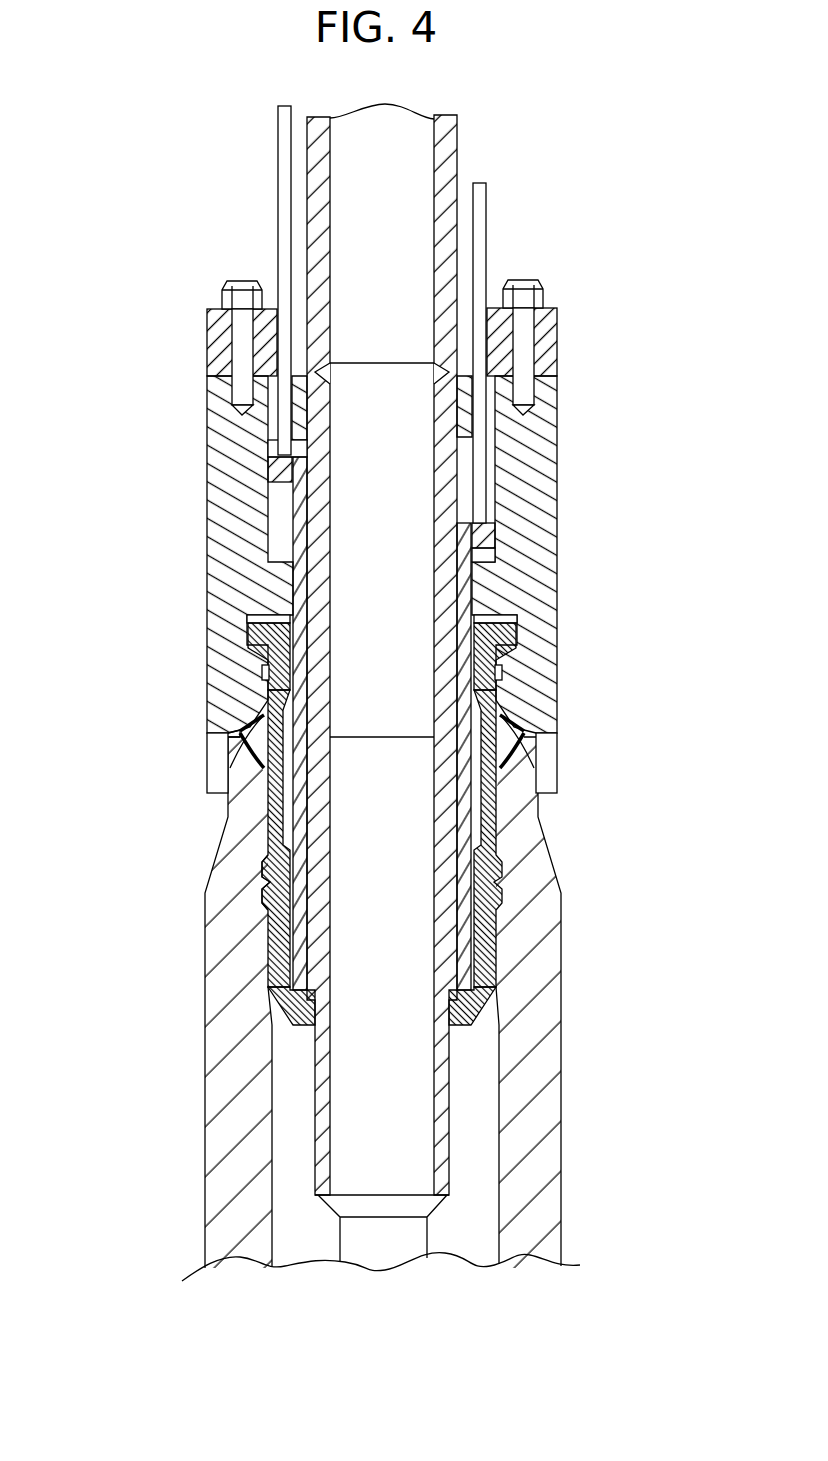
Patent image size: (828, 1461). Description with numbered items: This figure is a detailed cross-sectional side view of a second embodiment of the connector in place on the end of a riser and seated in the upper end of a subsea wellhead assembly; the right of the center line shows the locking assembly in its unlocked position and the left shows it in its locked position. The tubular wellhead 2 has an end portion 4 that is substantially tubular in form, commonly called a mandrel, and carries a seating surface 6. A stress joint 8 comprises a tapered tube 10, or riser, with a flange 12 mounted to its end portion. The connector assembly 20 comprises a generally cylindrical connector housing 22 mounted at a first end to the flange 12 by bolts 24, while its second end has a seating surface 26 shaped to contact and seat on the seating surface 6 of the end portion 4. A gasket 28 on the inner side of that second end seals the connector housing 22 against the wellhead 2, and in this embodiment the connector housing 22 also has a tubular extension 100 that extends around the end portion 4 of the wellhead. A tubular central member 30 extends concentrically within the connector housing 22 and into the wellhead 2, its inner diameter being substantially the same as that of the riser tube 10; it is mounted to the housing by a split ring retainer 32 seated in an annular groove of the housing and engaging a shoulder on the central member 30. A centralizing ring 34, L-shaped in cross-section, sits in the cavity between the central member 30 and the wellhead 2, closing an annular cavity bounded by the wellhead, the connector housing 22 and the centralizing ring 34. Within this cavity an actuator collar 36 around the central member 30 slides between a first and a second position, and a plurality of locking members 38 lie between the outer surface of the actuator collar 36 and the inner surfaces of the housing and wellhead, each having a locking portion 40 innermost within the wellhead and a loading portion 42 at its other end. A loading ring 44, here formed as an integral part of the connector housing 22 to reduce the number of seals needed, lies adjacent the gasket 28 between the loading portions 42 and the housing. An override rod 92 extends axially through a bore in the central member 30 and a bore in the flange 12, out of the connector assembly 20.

The wellhead 2 is at (533, 1185).
The end portion 4 is at (530, 770).
The seating surface 6 is at (520, 740).
The stress joint 8 is at (492, 150).
The tapered tube 10 is at (315, 160).
The flange 12 is at (212, 331).
The connector assembly 20 is at (590, 525).
The connector housing 22 is at (525, 570).
The bolts 24 is at (238, 353).
The seating surface 26 is at (256, 735).
The gasket 28 is at (258, 768).
The central member 30 is at (325, 1093).
The split ring retainer 32 is at (262, 380).
The centralizing ring 34 is at (490, 1000).
The actuator collar 36 is at (478, 880).
The locking members 38 is at (272, 822).
The locking portion 40 is at (268, 882).
The loading portion 42 is at (255, 632).
The loading ring 44 is at (500, 690).
The override rod 92 is at (286, 237).
The tubular extension 100 is at (225, 748).